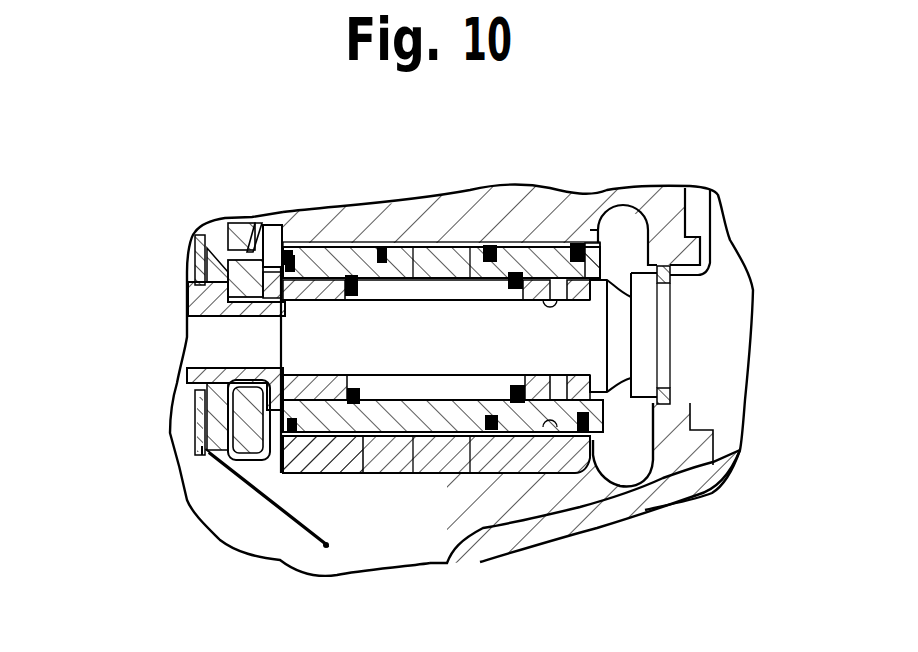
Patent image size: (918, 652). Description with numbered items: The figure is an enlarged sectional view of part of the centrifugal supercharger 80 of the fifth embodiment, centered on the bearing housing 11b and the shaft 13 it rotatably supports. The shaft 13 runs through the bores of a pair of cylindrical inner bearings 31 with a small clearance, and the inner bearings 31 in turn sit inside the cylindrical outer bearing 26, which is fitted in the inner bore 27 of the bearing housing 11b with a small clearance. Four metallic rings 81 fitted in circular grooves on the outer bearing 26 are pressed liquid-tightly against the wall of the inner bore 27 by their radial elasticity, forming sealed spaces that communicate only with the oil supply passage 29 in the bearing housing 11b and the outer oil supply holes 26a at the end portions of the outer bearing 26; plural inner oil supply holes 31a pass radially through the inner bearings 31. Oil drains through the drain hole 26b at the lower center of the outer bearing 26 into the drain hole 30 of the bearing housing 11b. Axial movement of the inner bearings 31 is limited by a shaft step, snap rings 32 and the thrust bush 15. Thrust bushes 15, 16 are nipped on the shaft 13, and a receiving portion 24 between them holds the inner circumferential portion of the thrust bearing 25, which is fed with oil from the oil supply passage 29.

The bearing housing 11b is at (527, 243).
The shaft 13 is at (572, 348).
The thrust bush 15 is at (250, 490).
The thrust bush 16 is at (188, 369).
The receiving portion 24 is at (228, 278).
The thrust bearing 25 is at (253, 420).
The cylindrical outer bearing 26 is at (448, 257).
The outer oil supply hole 26a is at (283, 247).
The drain hole 26b is at (426, 475).
The inner bore 27 is at (577, 467).
The oil supply passage 29 is at (333, 245).
The drain hole 30 is at (443, 450).
The cylindrical inner bearing 31 is at (608, 298).
The inner oil supply hole 31a is at (282, 322).
The snap ring 32 is at (353, 410).
The centrifugal supercharger 80 is at (744, 438).
The metallic ring 81 is at (290, 436).